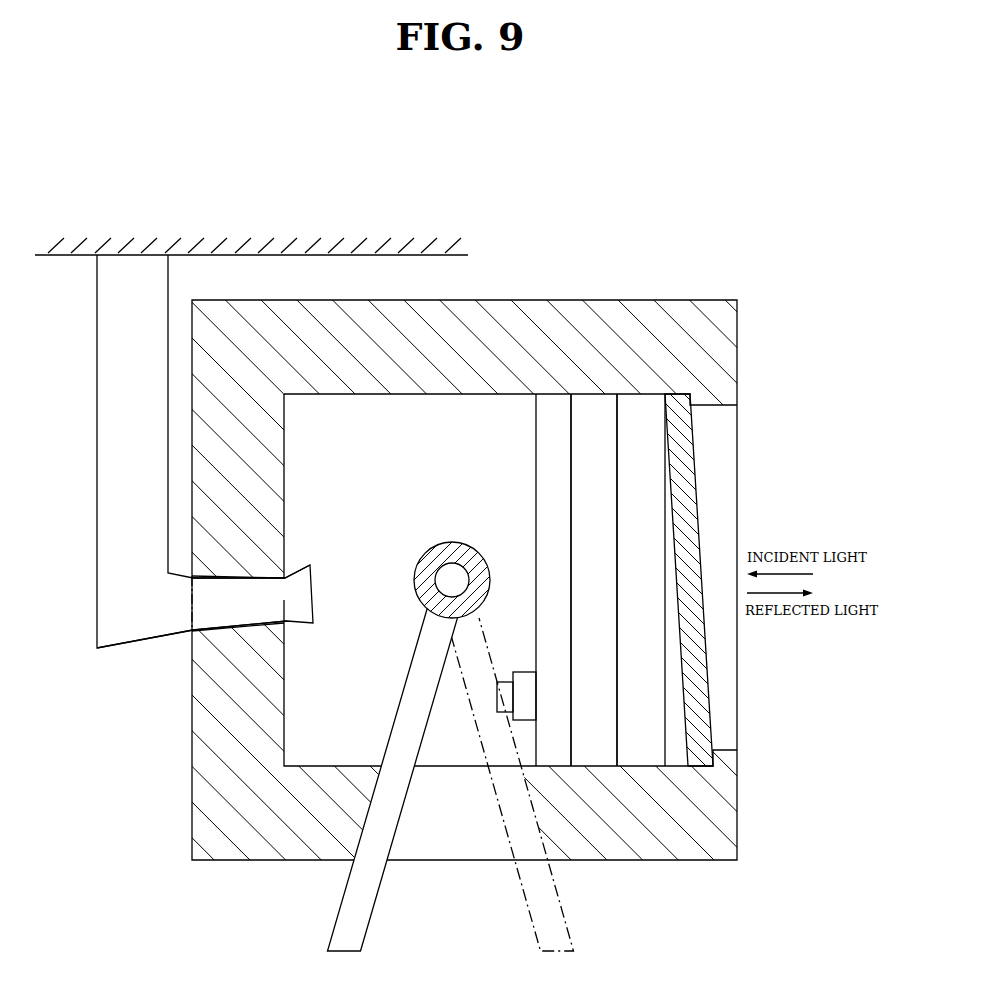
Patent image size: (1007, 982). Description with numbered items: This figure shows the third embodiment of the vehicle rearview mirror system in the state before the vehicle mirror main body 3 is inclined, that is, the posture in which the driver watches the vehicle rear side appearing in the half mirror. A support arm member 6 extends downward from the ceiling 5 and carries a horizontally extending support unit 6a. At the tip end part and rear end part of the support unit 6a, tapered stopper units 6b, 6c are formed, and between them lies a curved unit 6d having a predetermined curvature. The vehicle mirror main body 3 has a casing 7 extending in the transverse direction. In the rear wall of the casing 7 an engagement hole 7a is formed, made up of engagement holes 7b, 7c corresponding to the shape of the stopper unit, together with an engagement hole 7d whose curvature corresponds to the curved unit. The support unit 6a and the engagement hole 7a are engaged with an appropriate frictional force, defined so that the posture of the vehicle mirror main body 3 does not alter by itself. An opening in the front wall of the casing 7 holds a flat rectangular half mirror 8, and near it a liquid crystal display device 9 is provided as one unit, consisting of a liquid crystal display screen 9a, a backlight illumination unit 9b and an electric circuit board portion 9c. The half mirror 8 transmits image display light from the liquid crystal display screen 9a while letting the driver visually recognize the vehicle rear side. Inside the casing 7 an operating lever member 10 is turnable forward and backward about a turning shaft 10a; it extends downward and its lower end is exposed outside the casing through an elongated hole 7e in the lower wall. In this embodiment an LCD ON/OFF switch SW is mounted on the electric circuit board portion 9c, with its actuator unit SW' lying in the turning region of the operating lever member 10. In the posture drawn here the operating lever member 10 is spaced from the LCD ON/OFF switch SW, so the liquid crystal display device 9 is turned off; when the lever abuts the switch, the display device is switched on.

The vehicle mirror main body 3 is at (505, 290).
The ceiling 5 is at (226, 231).
The support arm member 6 is at (206, 528).
The support unit 6a is at (238, 578).
The stopper unit 6b is at (180, 632).
The stopper unit 6c is at (285, 577).
The curved unit 6d is at (238, 630).
The casing 7 is at (407, 491).
The engagement hole 7a is at (273, 573).
The engagement hole 7b is at (210, 624).
The engagement hole 7c is at (287, 623).
The engagement hole 7d is at (228, 583).
The elongated hole 7e is at (482, 847).
The half mirror 8 is at (690, 540).
The liquid crystal display device 9 is at (600, 489).
The liquid crystal display screen 9a is at (644, 412).
The backlight illumination unit 9b is at (597, 412).
The electric circuit board portion 9c is at (552, 407).
The operating lever member 10 is at (388, 824).
The turning shaft 10a is at (453, 580).
The LCD ON/OFF switch SW is at (552, 651).
The actuator unit SW' is at (509, 780).